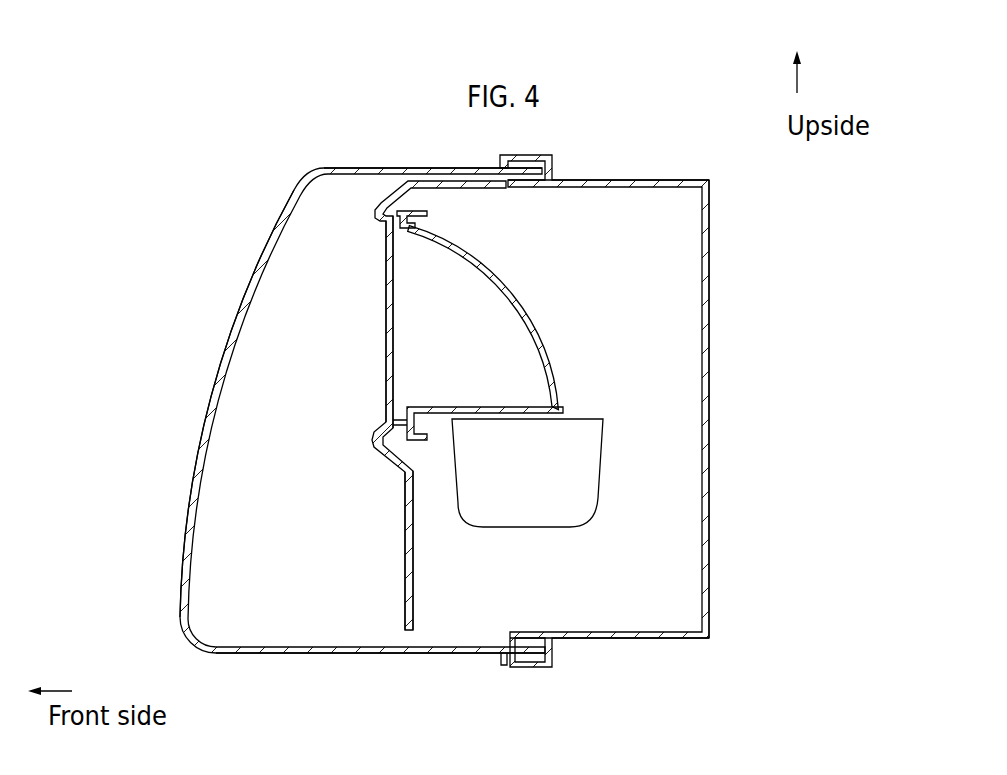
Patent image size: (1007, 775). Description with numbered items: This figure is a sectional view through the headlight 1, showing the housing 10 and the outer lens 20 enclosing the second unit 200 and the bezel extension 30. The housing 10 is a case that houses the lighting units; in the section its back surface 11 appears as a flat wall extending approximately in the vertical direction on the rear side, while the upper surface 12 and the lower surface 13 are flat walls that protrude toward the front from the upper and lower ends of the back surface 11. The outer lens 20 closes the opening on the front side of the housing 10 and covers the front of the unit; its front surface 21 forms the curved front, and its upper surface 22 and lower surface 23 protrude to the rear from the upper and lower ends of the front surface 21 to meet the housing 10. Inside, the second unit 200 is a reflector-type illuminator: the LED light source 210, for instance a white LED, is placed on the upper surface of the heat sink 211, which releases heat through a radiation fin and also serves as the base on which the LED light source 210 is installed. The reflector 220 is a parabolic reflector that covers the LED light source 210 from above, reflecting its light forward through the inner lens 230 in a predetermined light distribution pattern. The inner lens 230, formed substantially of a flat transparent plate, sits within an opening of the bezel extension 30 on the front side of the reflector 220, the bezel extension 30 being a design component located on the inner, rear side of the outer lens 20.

The headlight 1 is at (183, 157).
The housing 10 is at (680, 150).
The back surface 11 is at (708, 239).
The upper surface 12 is at (617, 180).
The lower surface 13 is at (648, 636).
The outer lens 20 is at (227, 221).
The front surface 21 is at (254, 275).
The upper surface 22 is at (344, 168).
The lower surface 23 is at (284, 653).
The second unit 200 is at (340, 365).
The LED light source 210 is at (510, 403).
The heat sink 211 is at (600, 452).
The reflector 220 is at (536, 337).
The inner lens 230 is at (385, 327).
The bezel extension 30 is at (410, 534).